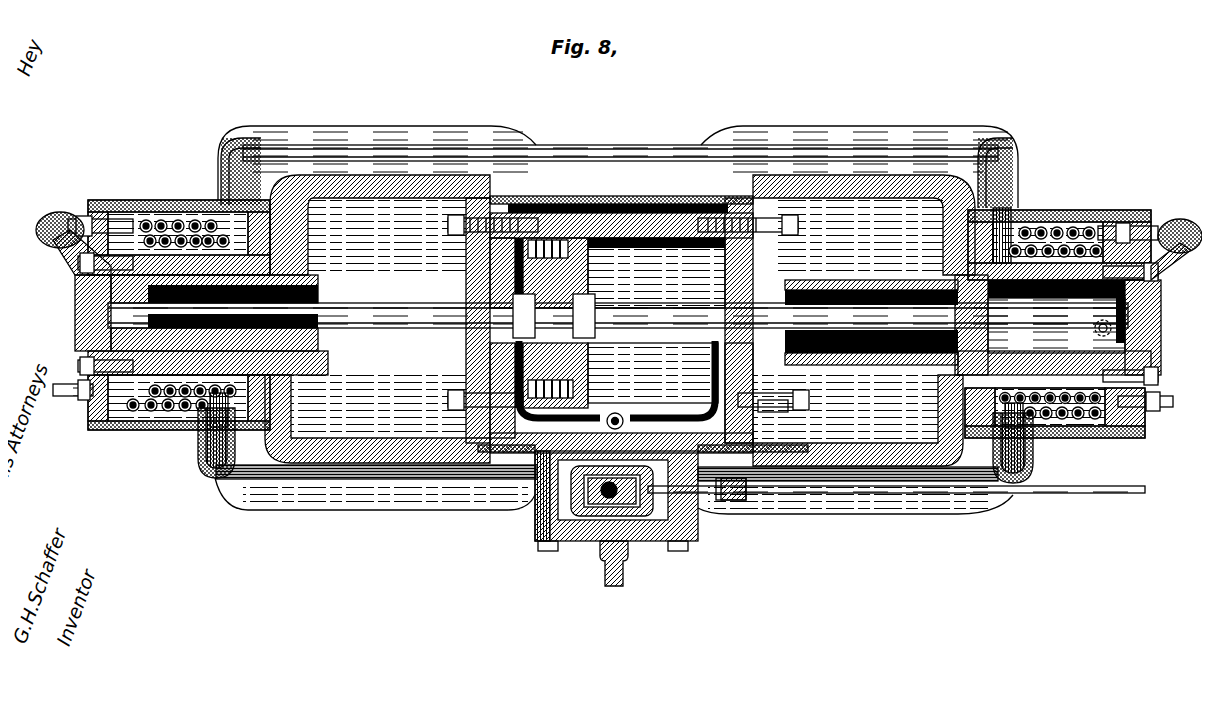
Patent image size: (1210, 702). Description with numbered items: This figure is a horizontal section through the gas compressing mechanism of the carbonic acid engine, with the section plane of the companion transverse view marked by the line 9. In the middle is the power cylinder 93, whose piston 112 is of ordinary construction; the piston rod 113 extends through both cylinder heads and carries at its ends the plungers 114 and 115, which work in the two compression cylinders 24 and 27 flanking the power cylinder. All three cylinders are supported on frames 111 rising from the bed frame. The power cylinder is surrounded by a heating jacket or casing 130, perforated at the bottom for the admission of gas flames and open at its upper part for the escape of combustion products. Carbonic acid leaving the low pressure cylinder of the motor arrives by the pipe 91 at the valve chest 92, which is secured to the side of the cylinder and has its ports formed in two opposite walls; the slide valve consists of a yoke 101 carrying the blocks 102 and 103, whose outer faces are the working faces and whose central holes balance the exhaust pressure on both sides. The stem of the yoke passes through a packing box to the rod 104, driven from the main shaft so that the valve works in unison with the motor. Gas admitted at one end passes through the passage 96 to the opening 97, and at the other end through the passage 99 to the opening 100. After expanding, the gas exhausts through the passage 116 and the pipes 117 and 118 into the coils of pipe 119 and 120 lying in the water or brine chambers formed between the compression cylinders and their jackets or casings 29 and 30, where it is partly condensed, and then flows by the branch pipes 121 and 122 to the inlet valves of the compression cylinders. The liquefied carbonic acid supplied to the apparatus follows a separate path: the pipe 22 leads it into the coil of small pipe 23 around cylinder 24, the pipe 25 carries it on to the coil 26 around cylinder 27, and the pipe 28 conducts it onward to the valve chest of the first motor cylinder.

The section line 9- 9 is at (605, 137).
The pipe 22 is at (58, 390).
The coil of small pipe 23 is at (130, 405).
The compression cylinder 24 is at (67, 312).
The pipe 25 is at (560, 132).
The coil 26 is at (1058, 212).
The compression cylinder 27 is at (973, 325).
The pipe 28 is at (1152, 396).
The jacket or casing 29 is at (182, 188).
The jacket or casing 30 is at (1100, 430).
The pipe 91 is at (618, 556).
The valve chest 92 is at (575, 528).
The power cylinder 93 is at (653, 370).
The passage 96 is at (640, 405).
The opening 97 is at (752, 392).
The passage 99 is at (578, 400).
The opening 100 is at (470, 378).
The valve yoke 101 is at (560, 478).
The valve block 102 is at (560, 505).
The valve block 103 is at (575, 500).
The rod 104 is at (1052, 490).
The frames 111 is at (614, 409).
The piston 112 is at (656, 273).
The piston rod 113 is at (372, 302).
The plunger 114 is at (387, 247).
The plunger 115 is at (856, 272).
The passage 116 is at (612, 402).
The pipe 117 is at (200, 468).
The pipe 118 is at (1010, 478).
The coil of pipe 119 is at (172, 405).
The coil of pipe 120 is at (1055, 420).
The branch pipe 121 is at (48, 205).
The branch pipe 122 is at (1172, 210).
The jacket or casing 130 is at (640, 184).